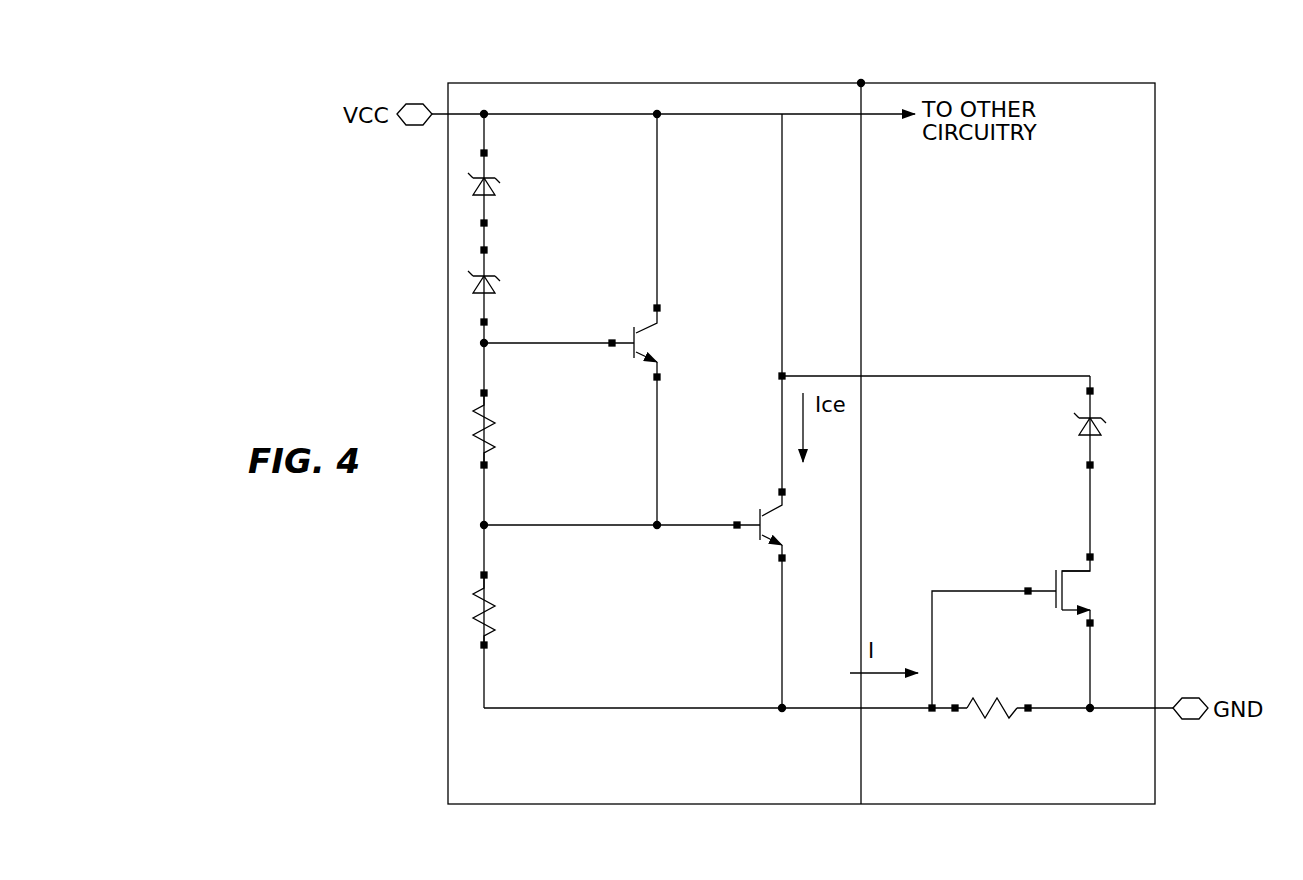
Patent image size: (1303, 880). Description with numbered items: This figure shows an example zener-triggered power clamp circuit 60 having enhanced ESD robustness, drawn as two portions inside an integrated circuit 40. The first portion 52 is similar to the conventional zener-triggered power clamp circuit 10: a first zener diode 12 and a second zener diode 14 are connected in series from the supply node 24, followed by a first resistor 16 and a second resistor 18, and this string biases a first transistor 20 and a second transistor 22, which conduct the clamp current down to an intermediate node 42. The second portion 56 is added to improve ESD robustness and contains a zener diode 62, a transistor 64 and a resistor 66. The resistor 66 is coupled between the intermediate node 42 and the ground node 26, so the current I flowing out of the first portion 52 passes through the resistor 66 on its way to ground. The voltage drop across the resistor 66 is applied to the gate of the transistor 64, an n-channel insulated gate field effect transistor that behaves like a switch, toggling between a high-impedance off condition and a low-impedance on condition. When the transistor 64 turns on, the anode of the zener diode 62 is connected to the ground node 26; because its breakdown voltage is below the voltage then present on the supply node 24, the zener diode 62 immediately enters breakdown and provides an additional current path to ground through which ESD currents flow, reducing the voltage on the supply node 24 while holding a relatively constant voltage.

The zener-triggered power clamp circuit 10 is at (1031, 630).
The first zener diode 12 is at (496, 193).
The second zener diode 14 is at (496, 291).
The first resistor 16 is at (492, 445).
The second resistor 18 is at (492, 625).
The first transistor 20 is at (647, 325).
The second transistor 22 is at (777, 503).
The supply node 24 is at (605, 117).
The ground node 26 is at (1125, 712).
The integrated circuit 40 is at (1155, 167).
The intermediate node 42 is at (660, 710).
The first portion 52 is at (654, 443).
The second portion 56 is at (1008, 443).
The zener-triggered power clamp circuit 60 is at (856, 50).
The zener diode 62 is at (1078, 428).
The transistor 64 is at (1075, 570).
The resistor 66 is at (1010, 702).